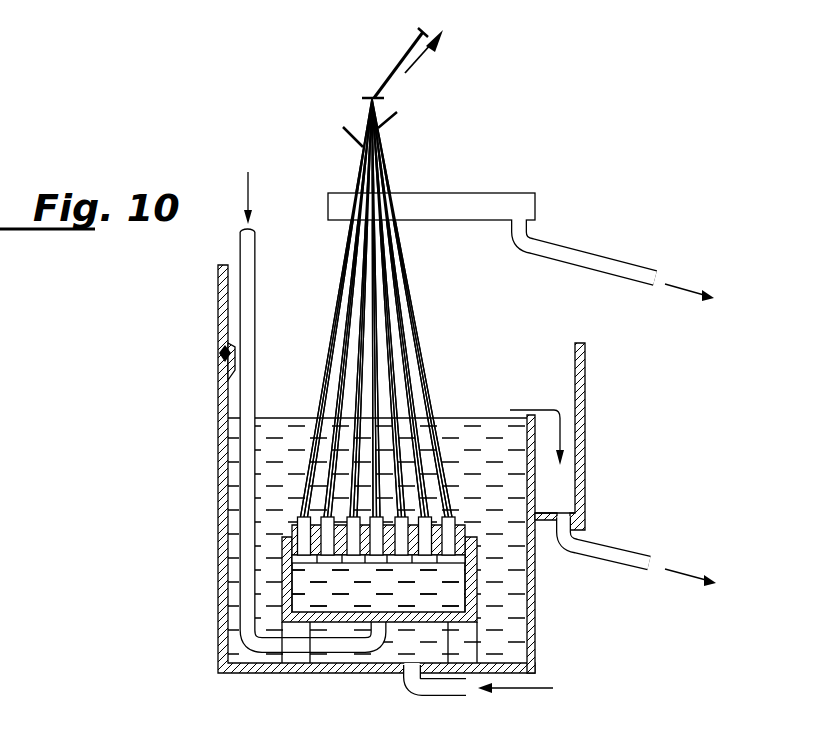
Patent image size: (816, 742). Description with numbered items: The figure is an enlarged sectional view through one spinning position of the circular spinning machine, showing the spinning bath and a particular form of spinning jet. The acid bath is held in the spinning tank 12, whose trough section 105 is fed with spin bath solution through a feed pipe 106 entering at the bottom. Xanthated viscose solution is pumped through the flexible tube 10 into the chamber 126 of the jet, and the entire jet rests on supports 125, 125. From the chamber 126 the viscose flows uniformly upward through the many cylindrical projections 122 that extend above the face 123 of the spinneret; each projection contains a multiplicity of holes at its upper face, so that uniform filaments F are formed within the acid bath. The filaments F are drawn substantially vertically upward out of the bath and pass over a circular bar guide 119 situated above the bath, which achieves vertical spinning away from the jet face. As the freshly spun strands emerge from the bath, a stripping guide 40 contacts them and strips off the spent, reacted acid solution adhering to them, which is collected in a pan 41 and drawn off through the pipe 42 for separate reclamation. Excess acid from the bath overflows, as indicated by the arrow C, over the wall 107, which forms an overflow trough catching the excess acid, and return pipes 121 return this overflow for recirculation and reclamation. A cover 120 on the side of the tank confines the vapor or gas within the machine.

The flexible tube 10 is at (248, 303).
The spinning tank 12 is at (512, 577).
The stripping guide 40 is at (350, 137).
The pan 41 is at (478, 203).
The pipe 42 is at (605, 268).
The trough section 105 is at (525, 448).
The feed pipe 106 is at (410, 672).
The overflow trough 107 is at (585, 426).
The circular bar guide 119 is at (372, 97).
The cover 120 is at (222, 313).
The return pipes 121 is at (618, 552).
The cylindrical projections 122 is at (330, 538).
The face of the spinneret 123 is at (283, 520).
The supports 125 is at (292, 631).
The chamber 126 is at (397, 601).
The filaments F is at (417, 322).
The normal bath overflow flow C is at (537, 419).